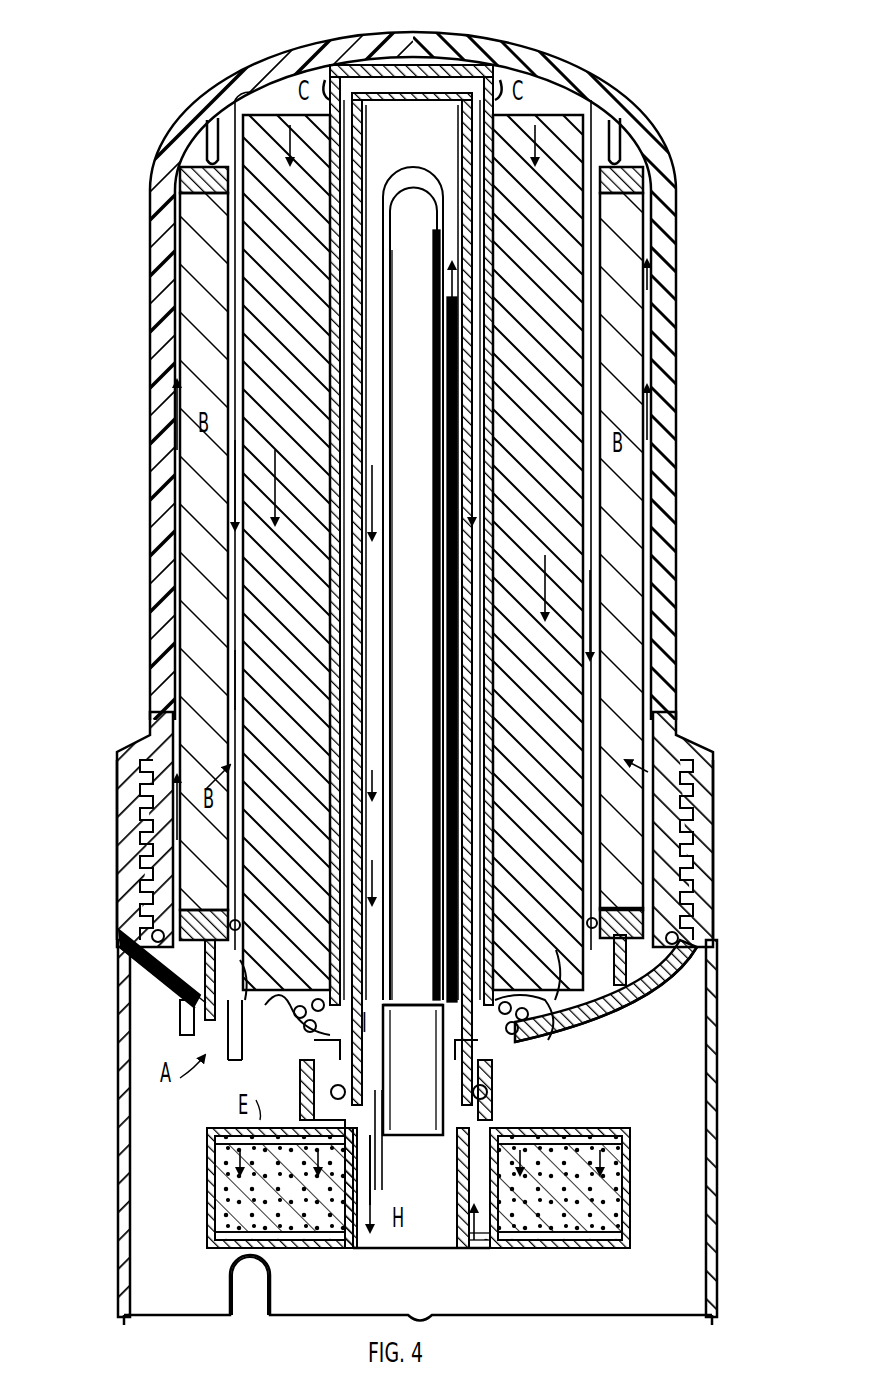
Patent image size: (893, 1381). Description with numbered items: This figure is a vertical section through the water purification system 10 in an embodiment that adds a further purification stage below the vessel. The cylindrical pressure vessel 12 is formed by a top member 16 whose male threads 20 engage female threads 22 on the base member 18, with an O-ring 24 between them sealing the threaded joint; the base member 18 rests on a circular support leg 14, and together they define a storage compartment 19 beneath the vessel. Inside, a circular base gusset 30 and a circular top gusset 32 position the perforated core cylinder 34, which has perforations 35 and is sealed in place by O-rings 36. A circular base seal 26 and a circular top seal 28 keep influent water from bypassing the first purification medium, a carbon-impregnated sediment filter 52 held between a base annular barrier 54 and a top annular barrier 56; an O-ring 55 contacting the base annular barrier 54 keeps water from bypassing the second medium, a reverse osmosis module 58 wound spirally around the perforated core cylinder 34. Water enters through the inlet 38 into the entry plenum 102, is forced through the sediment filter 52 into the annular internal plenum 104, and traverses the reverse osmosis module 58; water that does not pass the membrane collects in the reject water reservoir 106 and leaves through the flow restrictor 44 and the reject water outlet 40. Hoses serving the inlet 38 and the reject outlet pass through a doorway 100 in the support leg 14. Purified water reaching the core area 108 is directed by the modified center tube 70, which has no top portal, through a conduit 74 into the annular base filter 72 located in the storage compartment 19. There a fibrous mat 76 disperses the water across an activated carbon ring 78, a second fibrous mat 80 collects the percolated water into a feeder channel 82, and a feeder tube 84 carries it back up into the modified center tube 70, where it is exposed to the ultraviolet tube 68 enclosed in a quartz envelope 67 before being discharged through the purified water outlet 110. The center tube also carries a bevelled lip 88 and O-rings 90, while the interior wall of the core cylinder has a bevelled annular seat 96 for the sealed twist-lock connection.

The water purification system 10 is at (128, 180).
The cylindrical pressure vessel 12 is at (668, 185).
The circular support leg 14 is at (118, 1122).
The top member 16 is at (265, 78).
The base member 18 is at (118, 905).
The storage compartment 19 is at (578, 1270).
The male threads 20 is at (138, 800).
The female threads 22 is at (140, 855).
The O-ring 24 is at (152, 937).
The circular base seal 26 is at (215, 1025).
The circular top seal 28 is at (235, 112).
The circular base gusset 30 is at (312, 1075).
The circular top gusset 32 is at (325, 95).
The perforated core cylinder 34 is at (490, 80).
The perforations 35 is at (486, 352).
The O-rings 36 is at (362, 1000).
The inlet 38 is at (182, 1030).
The reject water outlet 40 is at (236, 1062).
The flow restrictor 44 is at (295, 1005).
The sediment filter 52 is at (411, 551).
The base annular barrier 54 is at (132, 982).
The O-ring 55 is at (235, 920).
The top annular barrier 56 is at (195, 165).
The reverse osmosis module 58 is at (413, 552).
The quartz envelope 67 is at (408, 195).
The ultraviolet tube 68 is at (413, 583).
The modified center tube 70 is at (425, 95).
The annular base filter 72 is at (207, 1178).
The conduit 74 is at (300, 1120).
The fibrous mat 76 is at (215, 1140).
The activated carbon ring 78 is at (418, 1188).
The second fibrous mat 80 is at (215, 1236).
The feeder channel 82 is at (470, 1236).
The feeder tube 84 is at (447, 440).
The bevelled lip 88 is at (385, 1040).
The O-rings 90 is at (346, 1098).
The bevelled annular seat 96 is at (390, 1062).
The doorway 100 is at (268, 1290).
The entry plenum 102 is at (176, 292).
The annular internal plenum 104 is at (235, 475).
The reject water reservoir 106 is at (250, 1005).
The core area 108 is at (400, 70).
The purified water outlet 110 is at (384, 1162).